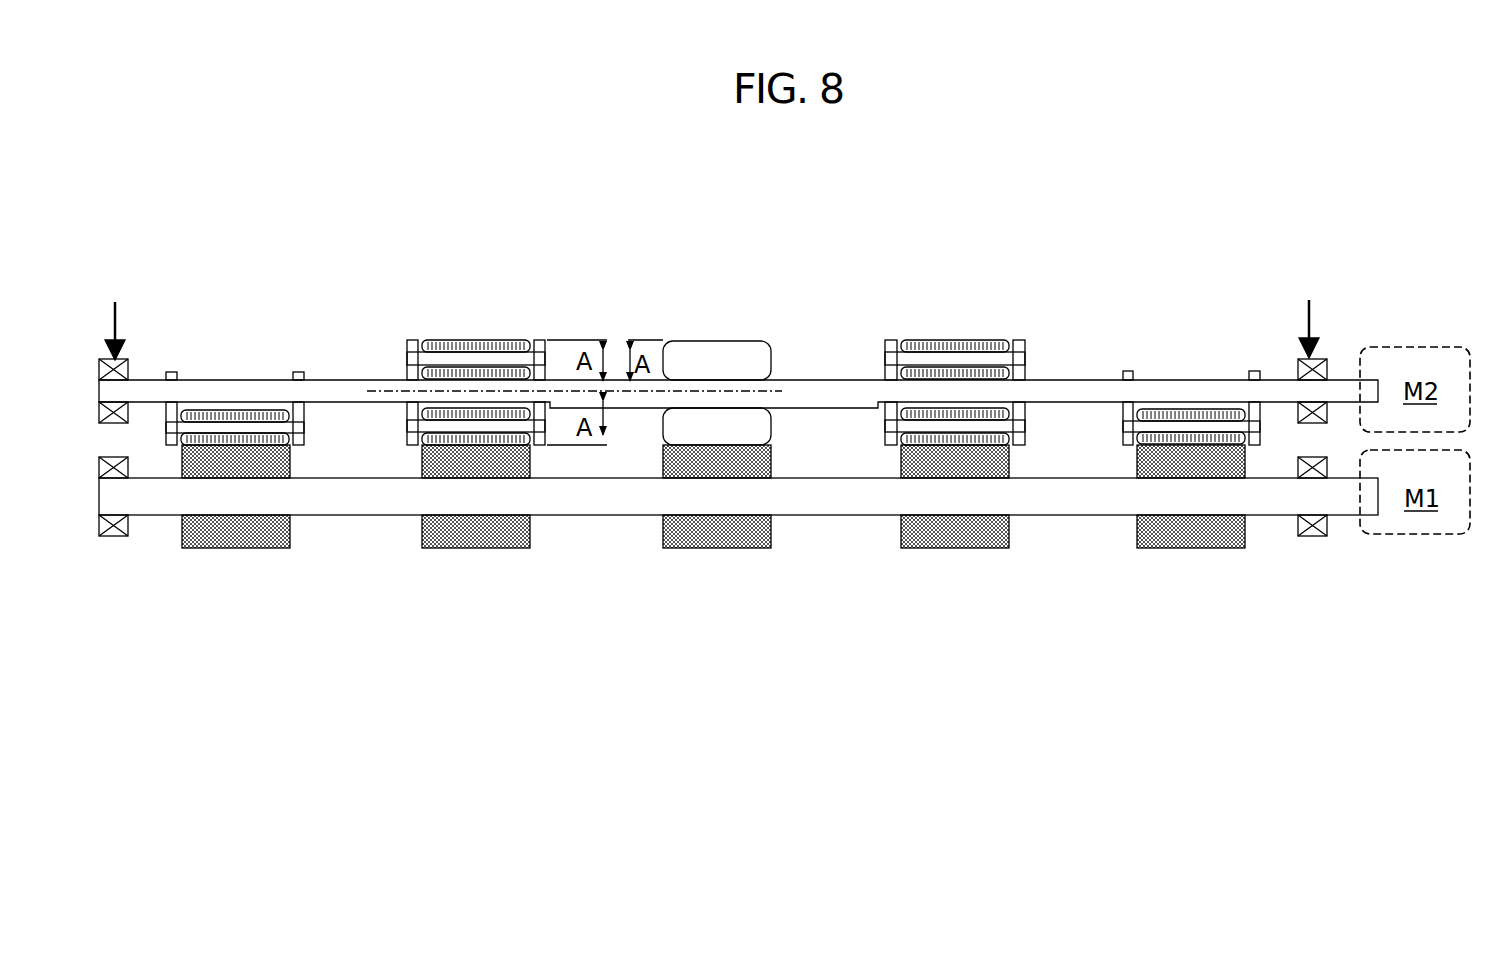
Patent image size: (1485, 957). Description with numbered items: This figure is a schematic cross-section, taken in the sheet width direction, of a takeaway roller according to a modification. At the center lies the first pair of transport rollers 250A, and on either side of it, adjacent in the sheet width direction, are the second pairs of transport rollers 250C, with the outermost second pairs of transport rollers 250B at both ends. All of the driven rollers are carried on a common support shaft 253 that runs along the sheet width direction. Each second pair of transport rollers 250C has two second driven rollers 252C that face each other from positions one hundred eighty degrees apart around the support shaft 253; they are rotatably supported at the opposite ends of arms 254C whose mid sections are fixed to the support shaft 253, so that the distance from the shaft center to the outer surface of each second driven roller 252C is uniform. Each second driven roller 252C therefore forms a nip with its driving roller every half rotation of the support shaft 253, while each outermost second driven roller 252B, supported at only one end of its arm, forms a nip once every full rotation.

The first pair of transport rollers 250A is at (724, 333).
The second pair of transport rollers 250B is at (714, 402).
The second pair of transport rollers 250C is at (716, 403).
The second driven roller 252B is at (237, 413).
The second driven roller 252C is at (493, 347).
The arm 254C is at (407, 371).
The support shaft 253 is at (1052, 392).